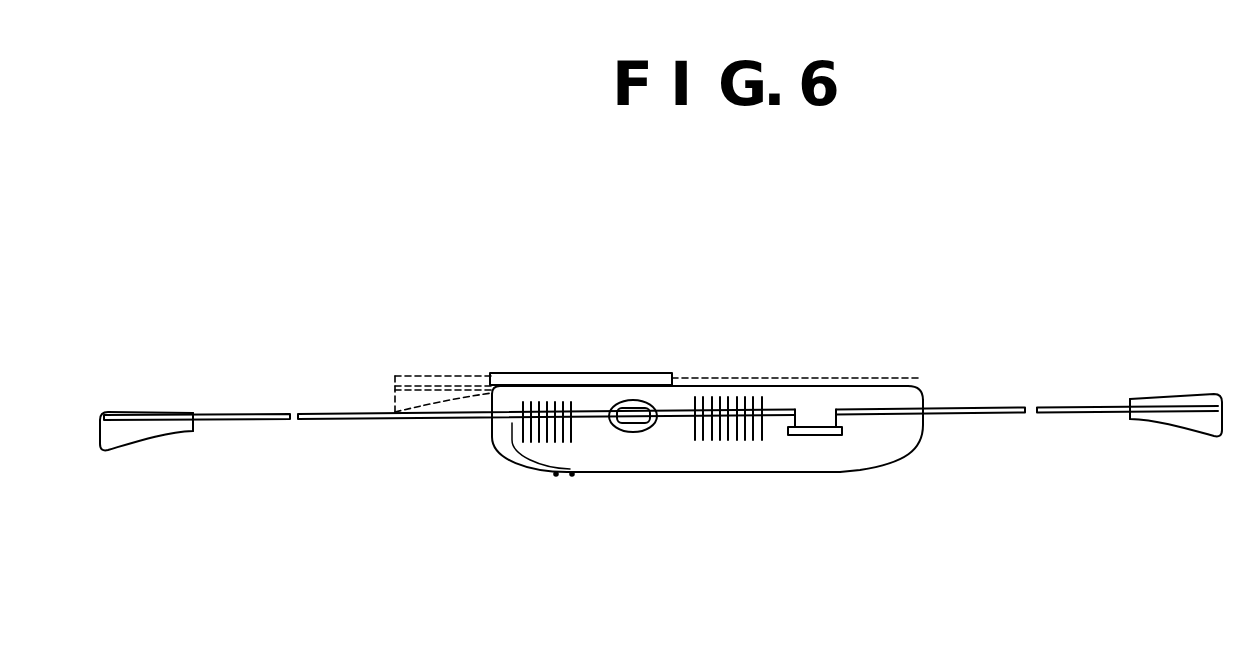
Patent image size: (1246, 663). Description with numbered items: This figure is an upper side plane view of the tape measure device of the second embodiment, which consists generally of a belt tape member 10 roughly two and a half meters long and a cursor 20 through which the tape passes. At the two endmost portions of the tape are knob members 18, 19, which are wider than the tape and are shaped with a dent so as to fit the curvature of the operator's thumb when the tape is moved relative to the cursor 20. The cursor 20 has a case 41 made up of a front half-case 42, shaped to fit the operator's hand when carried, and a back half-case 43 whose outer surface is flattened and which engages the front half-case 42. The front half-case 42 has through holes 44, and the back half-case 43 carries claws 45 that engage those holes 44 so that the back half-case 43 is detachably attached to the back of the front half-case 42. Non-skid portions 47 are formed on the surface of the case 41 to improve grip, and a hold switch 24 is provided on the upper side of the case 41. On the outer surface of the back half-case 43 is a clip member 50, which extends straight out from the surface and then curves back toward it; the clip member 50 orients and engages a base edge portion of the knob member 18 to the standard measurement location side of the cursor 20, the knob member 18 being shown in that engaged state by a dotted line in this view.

The belt tape member 10 is at (263, 412).
The knob member 18 is at (138, 411).
The knob member 19 is at (1178, 399).
The cursor 20 is at (731, 417).
The hold switch 24 is at (633, 419).
The case 41 is at (900, 452).
The front half-case 42 is at (867, 458).
The back half-case 43 is at (858, 395).
The through hole 44 is at (812, 435).
The claw 45 is at (813, 418).
The non-skid portion 47 is at (534, 400).
The clip member 50 is at (618, 372).